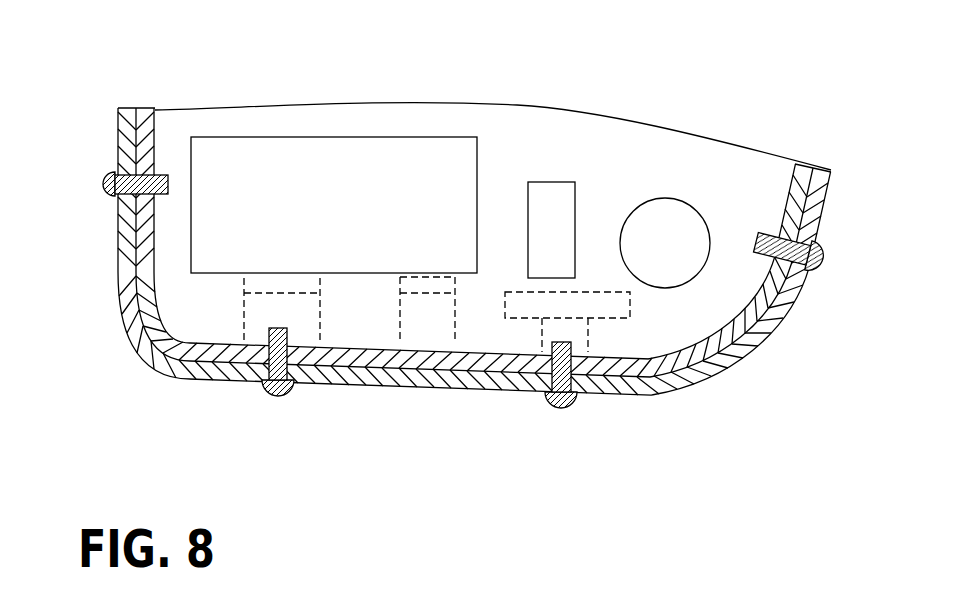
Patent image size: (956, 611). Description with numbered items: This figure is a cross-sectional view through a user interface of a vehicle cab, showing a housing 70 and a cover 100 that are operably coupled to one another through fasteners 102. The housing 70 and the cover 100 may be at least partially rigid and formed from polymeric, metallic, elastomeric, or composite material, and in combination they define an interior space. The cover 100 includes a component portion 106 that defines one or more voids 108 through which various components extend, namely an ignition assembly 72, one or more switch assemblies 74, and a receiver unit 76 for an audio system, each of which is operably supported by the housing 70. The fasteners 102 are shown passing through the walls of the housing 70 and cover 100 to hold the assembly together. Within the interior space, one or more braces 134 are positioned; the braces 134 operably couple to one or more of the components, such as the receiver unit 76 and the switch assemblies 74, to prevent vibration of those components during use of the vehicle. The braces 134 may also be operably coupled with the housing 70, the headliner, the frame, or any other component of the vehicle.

The housing 70 is at (145, 110).
The cover 100 is at (134, 112).
The fasteners 102 is at (108, 176).
The component portion 106 is at (348, 128).
The voids 108 is at (252, 207).
The receiver unit 76 is at (400, 183).
The switch assemblies 74 is at (550, 205).
The ignition assembly 72 is at (673, 218).
The braces 134 is at (242, 315).